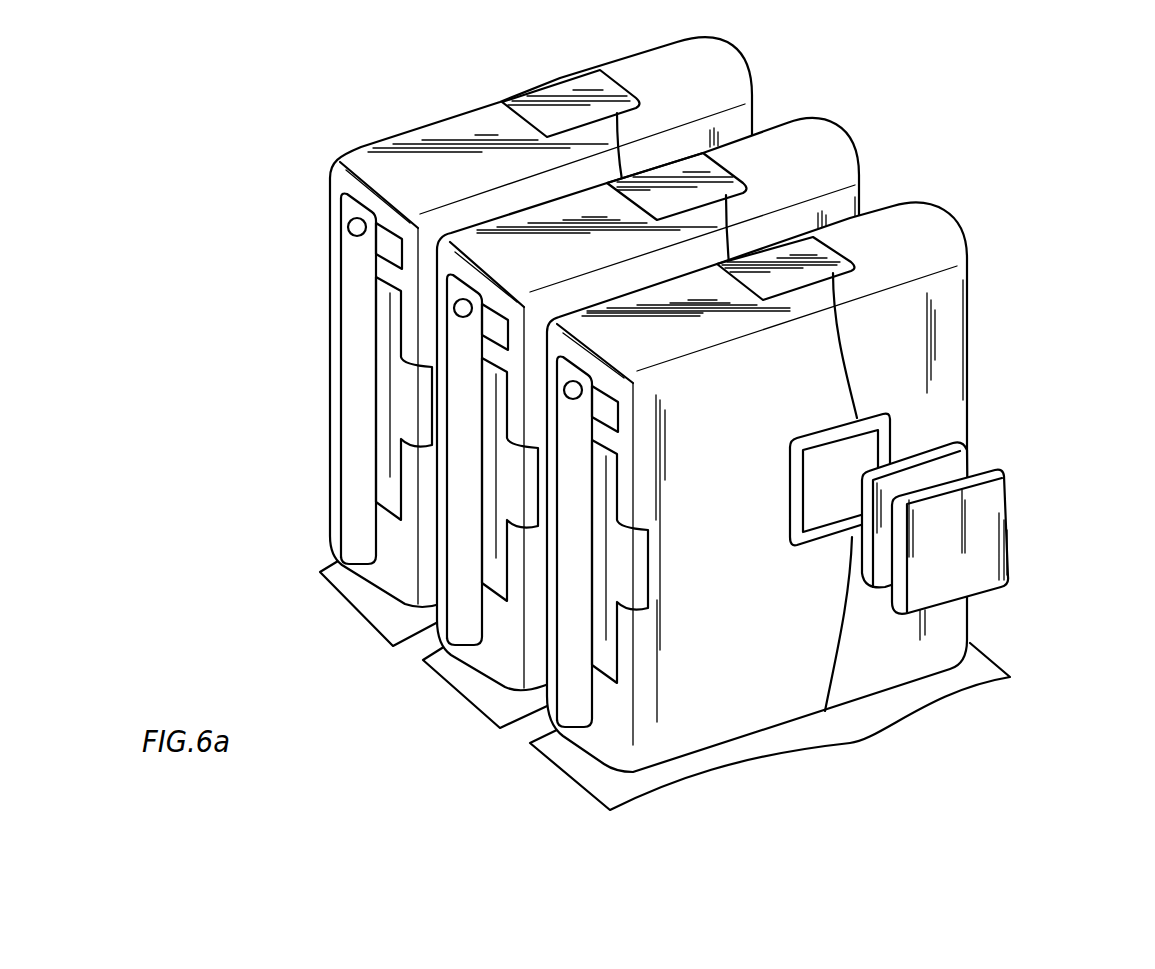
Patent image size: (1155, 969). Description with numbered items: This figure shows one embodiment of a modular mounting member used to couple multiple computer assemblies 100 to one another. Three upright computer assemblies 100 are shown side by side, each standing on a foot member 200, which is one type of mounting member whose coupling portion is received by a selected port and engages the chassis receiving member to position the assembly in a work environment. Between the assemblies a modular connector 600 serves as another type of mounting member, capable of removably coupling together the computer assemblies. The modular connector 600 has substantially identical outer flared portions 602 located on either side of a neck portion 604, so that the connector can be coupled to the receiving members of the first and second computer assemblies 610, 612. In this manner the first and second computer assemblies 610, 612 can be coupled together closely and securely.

The computer unit housing 100 is at (642, 404).
The foot member 200 is at (353, 612).
The modular connector 600 is at (963, 491).
The outer flared portions 602 is at (938, 491).
The neck portion 604 is at (970, 457).
The first computer assembly 610 is at (953, 236).
The second computer assembly 612 is at (838, 150).